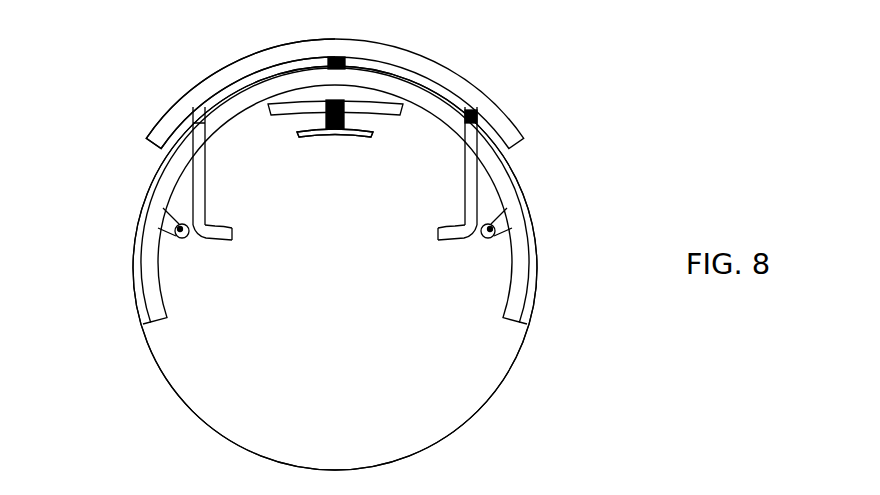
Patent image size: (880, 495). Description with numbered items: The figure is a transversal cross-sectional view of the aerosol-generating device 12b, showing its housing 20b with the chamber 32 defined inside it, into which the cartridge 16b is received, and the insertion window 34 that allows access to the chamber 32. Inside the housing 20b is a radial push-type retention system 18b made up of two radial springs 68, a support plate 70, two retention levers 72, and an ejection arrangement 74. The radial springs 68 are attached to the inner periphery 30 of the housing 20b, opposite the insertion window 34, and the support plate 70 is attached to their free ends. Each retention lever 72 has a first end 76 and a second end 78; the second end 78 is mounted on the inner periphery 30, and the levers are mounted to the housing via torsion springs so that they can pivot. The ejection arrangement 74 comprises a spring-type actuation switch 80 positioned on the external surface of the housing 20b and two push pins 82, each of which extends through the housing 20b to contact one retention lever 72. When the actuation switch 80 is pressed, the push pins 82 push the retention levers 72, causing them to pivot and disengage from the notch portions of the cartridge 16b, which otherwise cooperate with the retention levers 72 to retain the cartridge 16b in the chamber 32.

The aerosol-generating device 12b is at (541, 221).
The cartridge 16b is at (597, 162).
The radial push-type retention system 18b is at (335, 142).
The housing 20b is at (134, 246).
The inner periphery 30 is at (511, 313).
The chamber 32 is at (369, 197).
The insertion window 34 is at (160, 330).
The radial springs 68 is at (343, 118).
The support plate 70 is at (307, 133).
The retention levers 72 is at (218, 250).
The ejection arrangement 74 is at (500, 98).
The first end 76 is at (233, 236).
The second end 78 is at (182, 239).
The actuation switch 80 is at (232, 63).
The push pins 82 is at (193, 178).